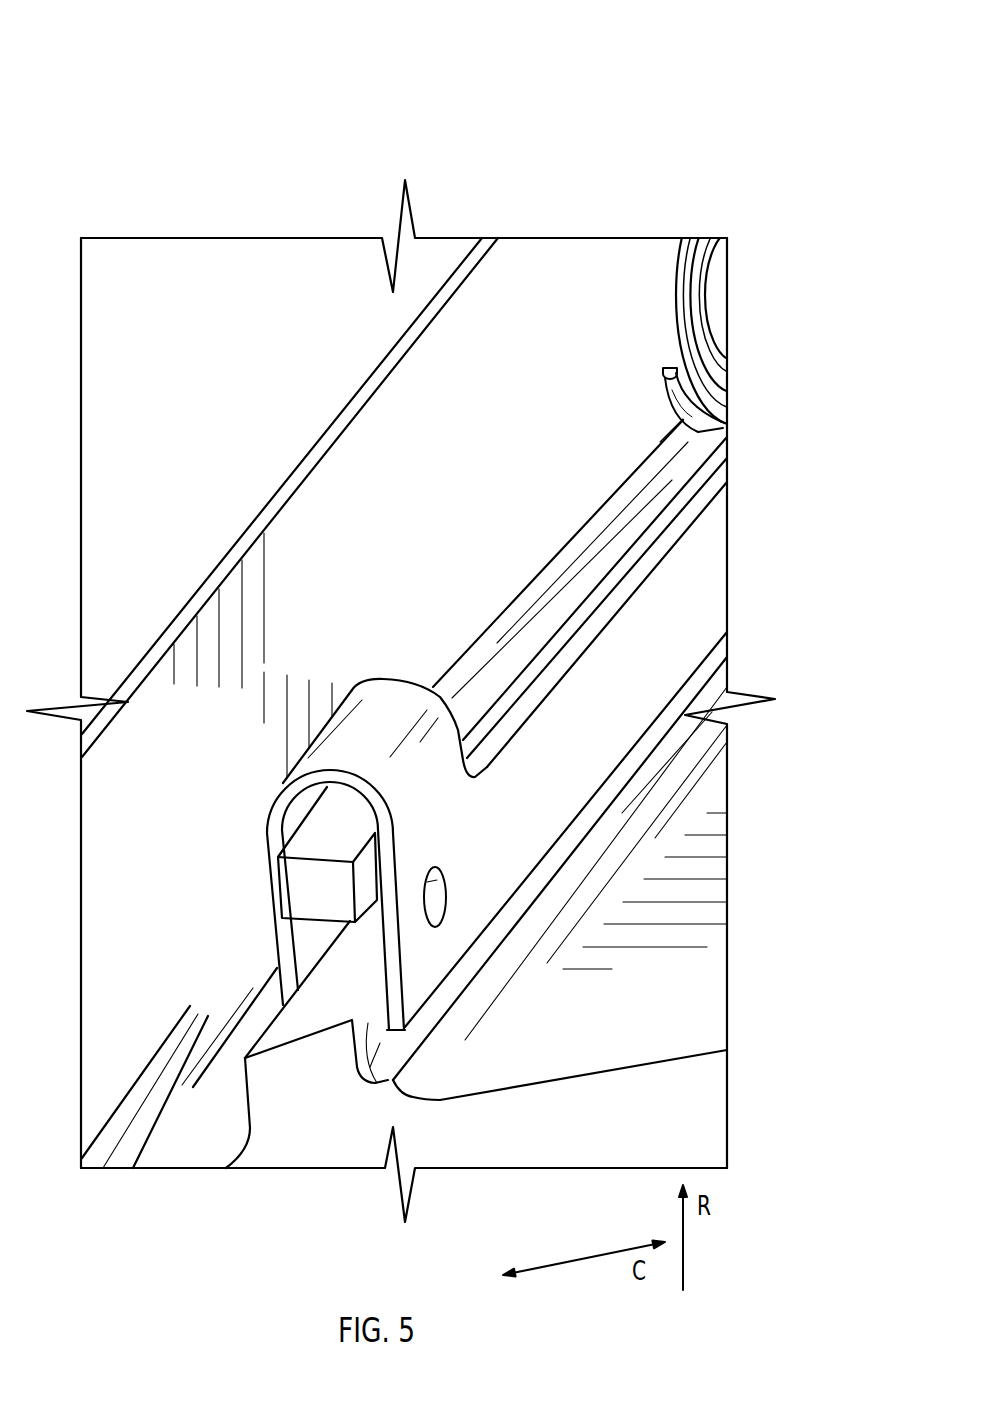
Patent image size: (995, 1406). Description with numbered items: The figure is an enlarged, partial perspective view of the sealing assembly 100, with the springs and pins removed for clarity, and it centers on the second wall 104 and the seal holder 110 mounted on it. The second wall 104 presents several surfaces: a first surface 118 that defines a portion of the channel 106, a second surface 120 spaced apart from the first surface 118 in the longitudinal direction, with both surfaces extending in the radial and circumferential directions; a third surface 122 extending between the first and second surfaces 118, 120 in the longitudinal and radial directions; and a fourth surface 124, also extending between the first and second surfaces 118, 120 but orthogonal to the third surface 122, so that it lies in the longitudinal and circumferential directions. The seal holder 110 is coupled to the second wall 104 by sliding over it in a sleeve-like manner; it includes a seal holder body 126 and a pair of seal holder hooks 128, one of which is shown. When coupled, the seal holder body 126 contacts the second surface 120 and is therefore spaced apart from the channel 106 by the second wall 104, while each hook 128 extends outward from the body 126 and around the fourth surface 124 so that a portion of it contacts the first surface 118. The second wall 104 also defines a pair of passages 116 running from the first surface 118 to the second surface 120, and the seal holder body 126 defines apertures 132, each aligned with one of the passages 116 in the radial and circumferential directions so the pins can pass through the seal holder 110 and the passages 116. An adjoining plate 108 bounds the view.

The sealing assembly 100 is at (140, 158).
The second wall 104 is at (605, 508).
The channel 106 is at (176, 1130).
The second plate 108 is at (537, 277).
The seal holder 110 is at (564, 816).
The passages 116 is at (310, 988).
The first surface 118 is at (263, 885).
The second surface 120 is at (377, 1080).
The third surface 122 is at (345, 901).
The fourth surface 124 is at (497, 670).
The seal holder body 126 is at (618, 718).
The seal holder hooks 128 is at (394, 697).
The apertures 132 is at (449, 911).